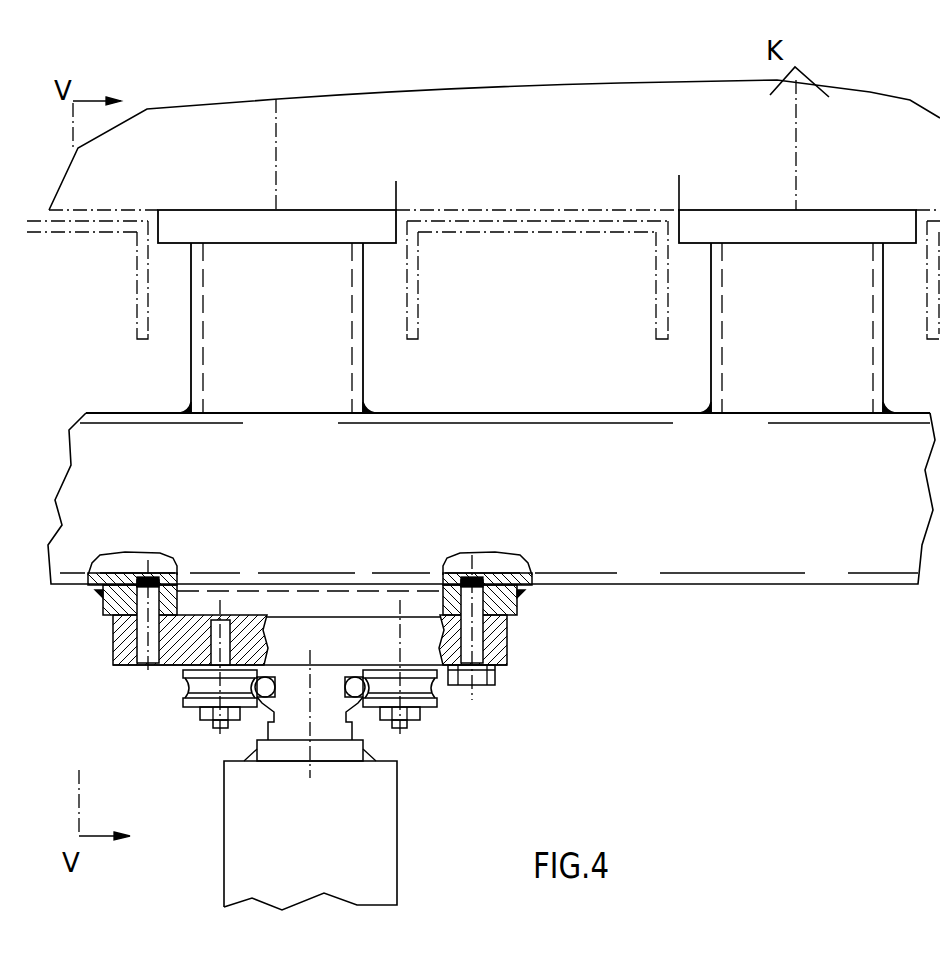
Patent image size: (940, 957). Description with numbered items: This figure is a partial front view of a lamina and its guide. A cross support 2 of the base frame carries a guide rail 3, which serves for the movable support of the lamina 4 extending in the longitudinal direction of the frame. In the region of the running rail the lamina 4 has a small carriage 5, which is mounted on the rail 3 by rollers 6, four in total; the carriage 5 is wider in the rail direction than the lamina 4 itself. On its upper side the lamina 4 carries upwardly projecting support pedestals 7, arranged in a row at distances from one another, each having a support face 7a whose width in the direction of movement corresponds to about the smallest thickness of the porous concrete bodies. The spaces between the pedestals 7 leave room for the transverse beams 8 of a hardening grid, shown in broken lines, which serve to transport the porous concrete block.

The cross support 2 is at (390, 818).
The guide rail 3 is at (330, 700).
The lamina 4 is at (808, 553).
The carriage 5 is at (165, 665).
The roller 6 is at (205, 688).
The support pedestal 7 is at (208, 345).
The support face 7a is at (726, 210).
The transverse beam 8 is at (465, 233).